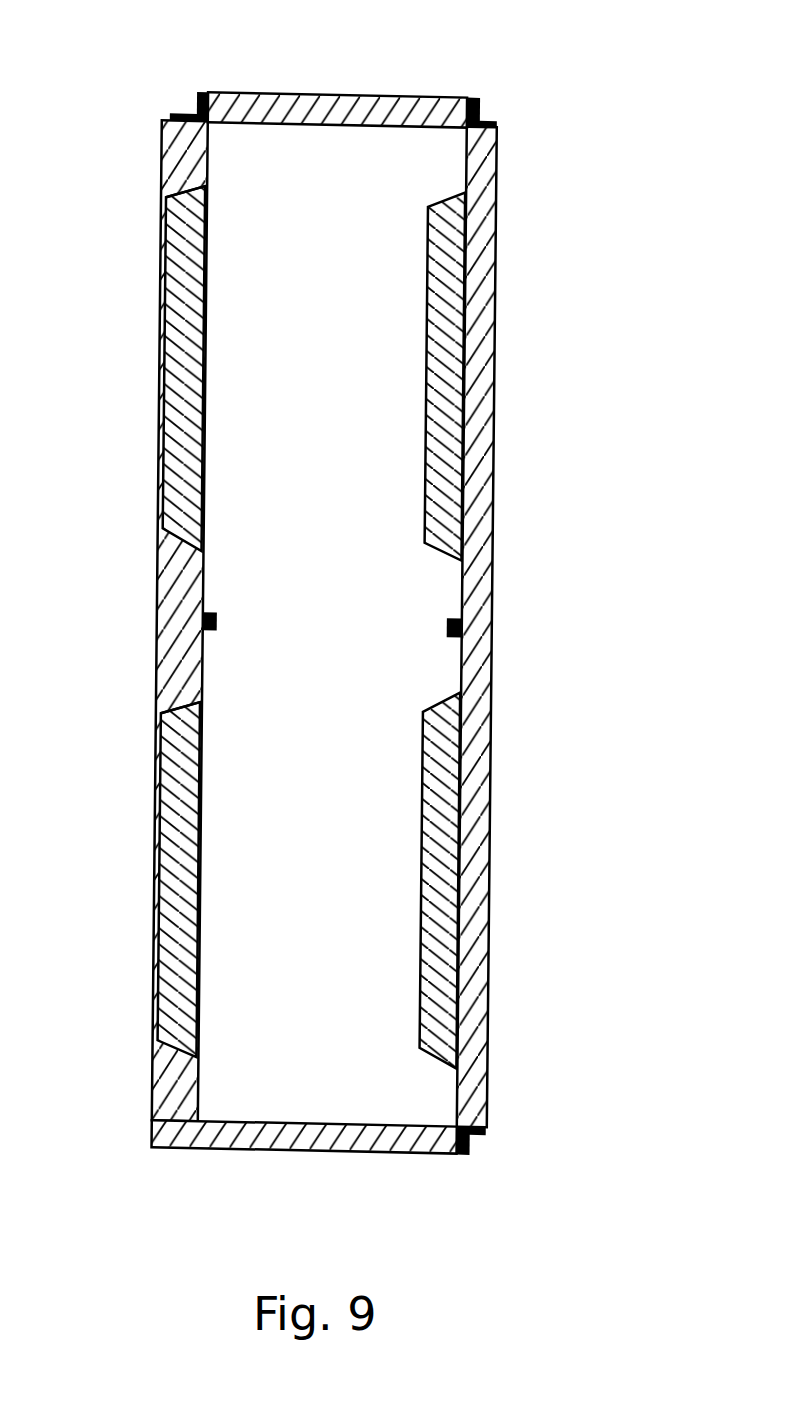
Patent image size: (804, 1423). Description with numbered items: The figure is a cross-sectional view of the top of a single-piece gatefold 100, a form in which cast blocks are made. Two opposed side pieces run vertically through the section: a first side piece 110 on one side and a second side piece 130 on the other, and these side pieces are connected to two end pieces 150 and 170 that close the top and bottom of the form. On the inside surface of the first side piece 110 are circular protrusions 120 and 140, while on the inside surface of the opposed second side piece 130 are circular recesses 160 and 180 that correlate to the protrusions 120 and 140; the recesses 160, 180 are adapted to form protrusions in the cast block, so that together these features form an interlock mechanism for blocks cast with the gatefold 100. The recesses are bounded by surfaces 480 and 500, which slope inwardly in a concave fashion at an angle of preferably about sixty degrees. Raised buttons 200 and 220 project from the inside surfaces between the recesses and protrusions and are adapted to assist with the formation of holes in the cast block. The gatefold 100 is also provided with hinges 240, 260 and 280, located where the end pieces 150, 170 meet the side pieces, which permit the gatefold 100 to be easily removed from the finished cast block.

The gatefold 100 is at (335, 615).
The first side piece 110 is at (493, 430).
The circular protrusion 120 is at (438, 343).
The second side piece 130 is at (160, 428).
The circular protrusion 140 is at (420, 832).
The end piece 150 is at (323, 97).
The circular recess 160 is at (205, 373).
The end piece 170 is at (267, 1150).
The circular recess 180 is at (202, 857).
The raised button 200 is at (447, 628).
The raised button 220 is at (217, 620).
The hinge 240 is at (485, 117).
The hinge 260 is at (197, 110).
The hinge 280 is at (470, 1148).
The sloping surface 480 is at (207, 196).
The sloping surface 500 is at (203, 716).